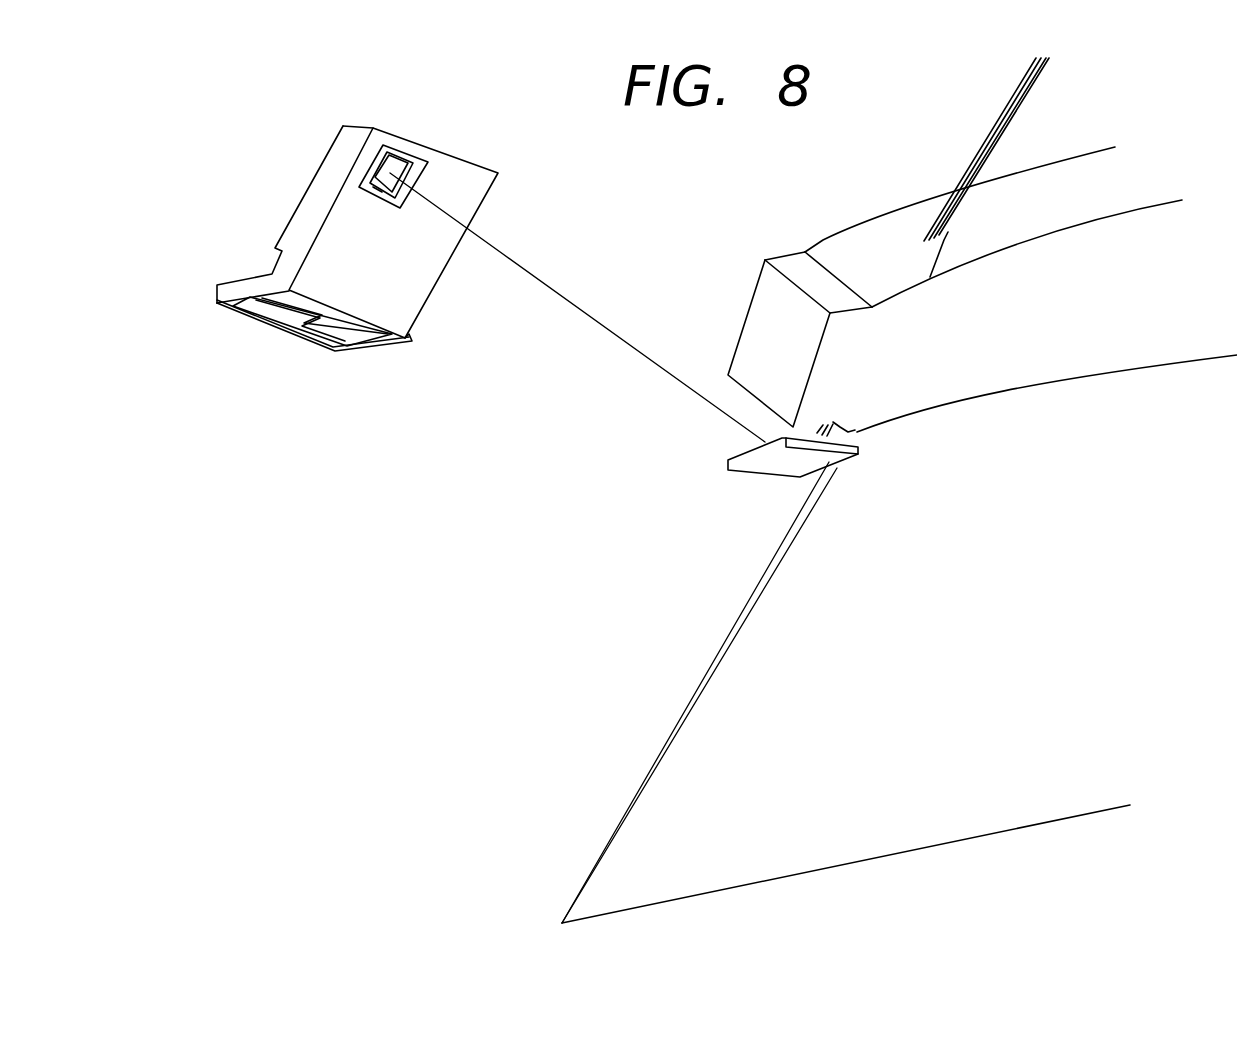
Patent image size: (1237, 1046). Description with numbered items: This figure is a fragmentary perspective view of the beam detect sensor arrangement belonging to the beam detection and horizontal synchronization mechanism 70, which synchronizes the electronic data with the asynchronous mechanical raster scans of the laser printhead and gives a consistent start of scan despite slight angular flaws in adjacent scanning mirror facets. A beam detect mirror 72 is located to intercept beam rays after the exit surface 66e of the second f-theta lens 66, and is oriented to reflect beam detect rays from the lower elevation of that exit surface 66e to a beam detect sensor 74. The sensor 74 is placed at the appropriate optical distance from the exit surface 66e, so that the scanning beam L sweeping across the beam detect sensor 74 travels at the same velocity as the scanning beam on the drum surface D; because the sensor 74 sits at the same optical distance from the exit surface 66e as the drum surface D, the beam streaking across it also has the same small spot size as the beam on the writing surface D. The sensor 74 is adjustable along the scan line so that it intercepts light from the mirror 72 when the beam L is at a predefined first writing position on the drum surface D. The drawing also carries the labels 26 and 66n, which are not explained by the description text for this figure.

The optical sensor assembly 26 is at (368, 235).
The beam detection and horizontal synchronization mechanism 70 is at (417, 282).
The beam detect sensor 74 is at (393, 163).
The beam detect mirror 72 is at (830, 457).
The f-theta lens 66 is at (982, 259).
The notch in rotating member 66n is at (1017, 228).
The exit surface 66e is at (932, 413).
The scanning beam L is at (712, 673).
The drum surface D is at (963, 838).